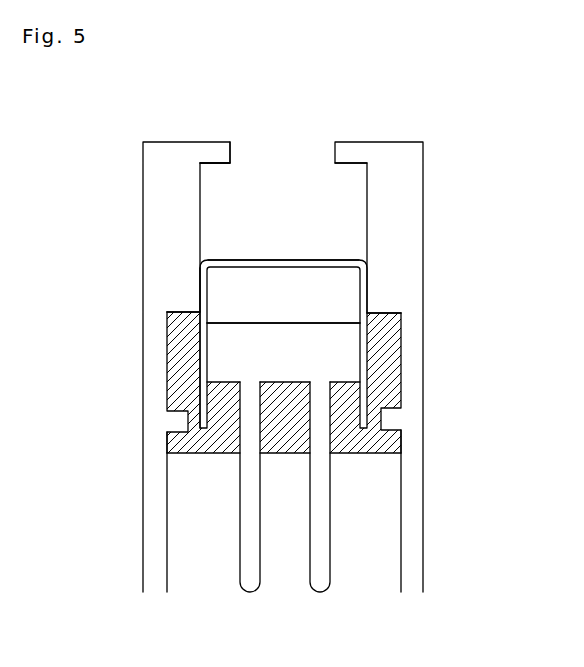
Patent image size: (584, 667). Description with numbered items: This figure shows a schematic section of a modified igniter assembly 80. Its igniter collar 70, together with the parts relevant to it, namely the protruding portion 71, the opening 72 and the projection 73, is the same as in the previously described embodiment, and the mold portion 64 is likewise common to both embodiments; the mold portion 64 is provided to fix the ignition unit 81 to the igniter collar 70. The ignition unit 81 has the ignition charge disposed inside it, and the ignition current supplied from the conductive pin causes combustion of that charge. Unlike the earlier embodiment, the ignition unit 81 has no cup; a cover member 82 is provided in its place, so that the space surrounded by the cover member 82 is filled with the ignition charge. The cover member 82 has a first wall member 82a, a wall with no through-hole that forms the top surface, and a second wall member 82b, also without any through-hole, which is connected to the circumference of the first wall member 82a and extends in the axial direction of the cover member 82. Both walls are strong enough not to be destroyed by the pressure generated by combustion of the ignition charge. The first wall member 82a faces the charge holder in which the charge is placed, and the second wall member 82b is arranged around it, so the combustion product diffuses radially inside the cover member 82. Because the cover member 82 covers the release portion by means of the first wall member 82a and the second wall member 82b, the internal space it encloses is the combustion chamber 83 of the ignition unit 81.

The mold portion 64 is at (392, 442).
The igniter collar 70 is at (413, 536).
The protruding portion 71 is at (217, 166).
The opening 72 is at (291, 153).
The projection 73 is at (183, 422).
The igniter assembly 80 is at (482, 190).
The ignition unit 81 is at (345, 346).
The cover member 82 is at (331, 260).
The first wall member 82a is at (276, 258).
The second wall member 82b is at (206, 300).
The combustion chamber 83 is at (345, 302).